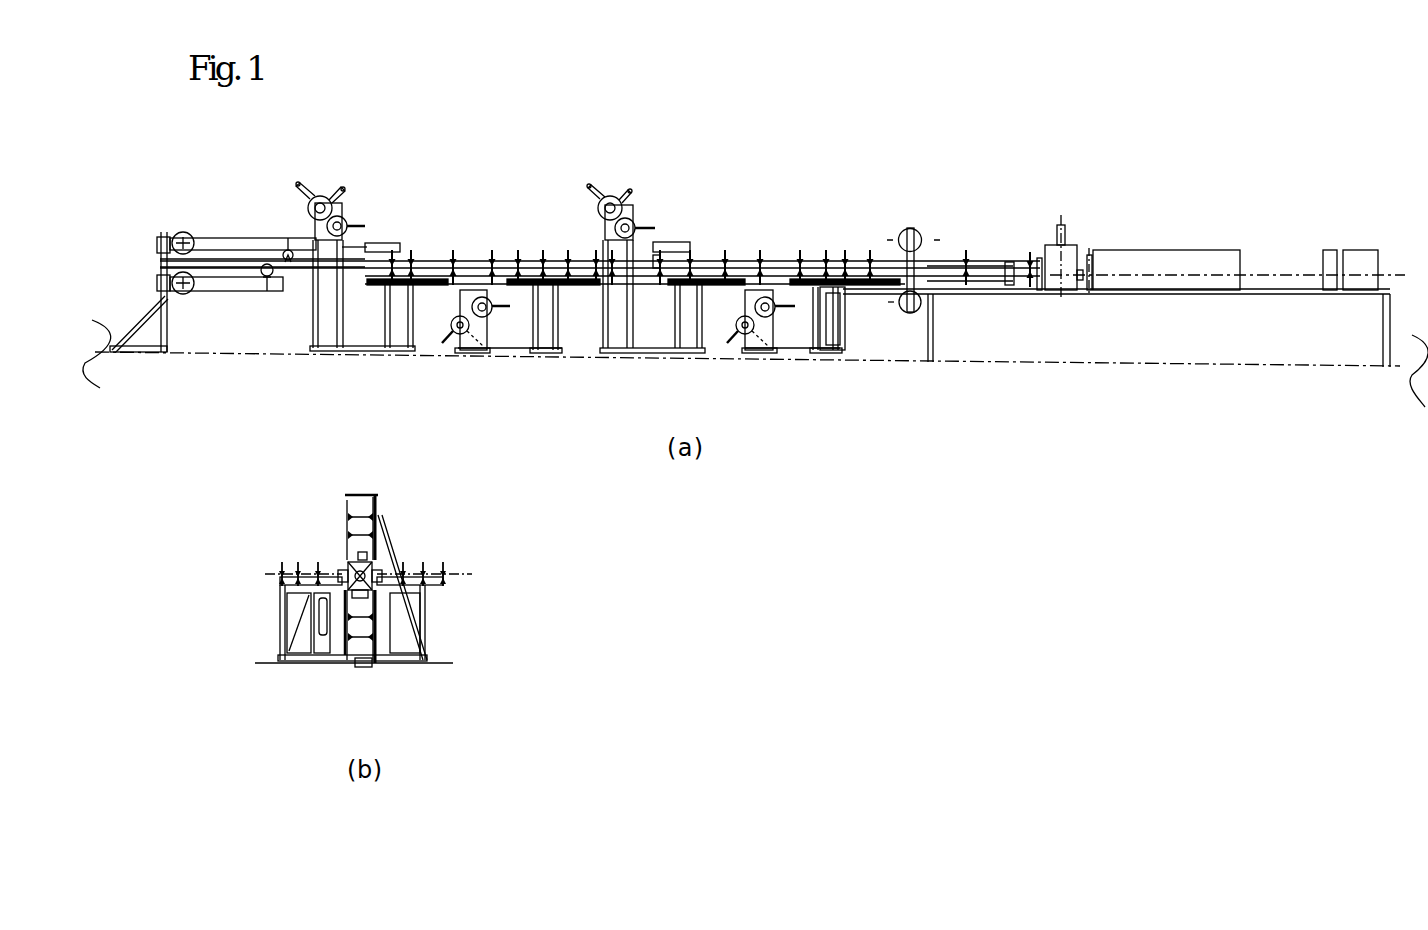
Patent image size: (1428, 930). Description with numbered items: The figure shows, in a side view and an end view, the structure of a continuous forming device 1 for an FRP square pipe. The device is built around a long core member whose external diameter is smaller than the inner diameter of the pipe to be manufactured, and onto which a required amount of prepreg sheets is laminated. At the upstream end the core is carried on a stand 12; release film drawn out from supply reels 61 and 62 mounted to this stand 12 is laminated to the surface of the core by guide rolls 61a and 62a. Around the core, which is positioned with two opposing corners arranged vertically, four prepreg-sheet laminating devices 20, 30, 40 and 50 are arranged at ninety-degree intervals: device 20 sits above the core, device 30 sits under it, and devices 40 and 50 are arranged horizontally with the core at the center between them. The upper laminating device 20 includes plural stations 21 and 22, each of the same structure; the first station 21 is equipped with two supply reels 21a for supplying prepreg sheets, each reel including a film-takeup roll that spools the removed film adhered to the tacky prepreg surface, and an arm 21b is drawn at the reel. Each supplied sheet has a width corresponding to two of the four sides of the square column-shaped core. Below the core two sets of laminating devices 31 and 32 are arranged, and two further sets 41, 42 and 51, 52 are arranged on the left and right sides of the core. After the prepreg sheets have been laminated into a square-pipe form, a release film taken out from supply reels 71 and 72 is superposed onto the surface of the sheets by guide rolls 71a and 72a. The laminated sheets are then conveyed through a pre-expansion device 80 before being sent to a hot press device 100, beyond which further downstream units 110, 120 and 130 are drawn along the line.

The continuous forming device 1 is at (820, 178).
The stand 12 is at (165, 354).
The prepreg-sheet laminating device 20 is at (361, 490).
The first station 21 is at (325, 182).
The supply reel 21a is at (347, 222).
The arm 21b is at (318, 196).
The station 22 is at (614, 190).
The prepreg-sheet laminating device 30 is at (362, 676).
The prepreg-sheet laminating device 31 is at (473, 357).
The prepreg-sheet laminating device 32 is at (760, 365).
The prepreg-sheet laminating device 40 is at (262, 580).
The prepreg-sheet laminating device 41 is at (416, 253).
The prepreg-sheet laminating device 42 is at (728, 248).
The prepreg-sheet laminating device 50 is at (477, 578).
The prepreg-sheet laminating device 51 is at (580, 303).
The prepreg-sheet laminating device 52 is at (855, 302).
The supply reel 61 is at (183, 232).
The guide roll 61a is at (288, 250).
The supply reel 62 is at (186, 294).
The guide roll 62a is at (267, 278).
The supply reel 71 is at (912, 229).
The guide roll 71a is at (966, 262).
The supply reel 72 is at (910, 314).
The guide roll 72a is at (968, 287).
The pre-expansion device 80 is at (1024, 258).
The hot press device 100 is at (1068, 247).
The main body 110 is at (1183, 252).
The bearing 120 is at (1328, 249).
The end unit 130 is at (1370, 249).